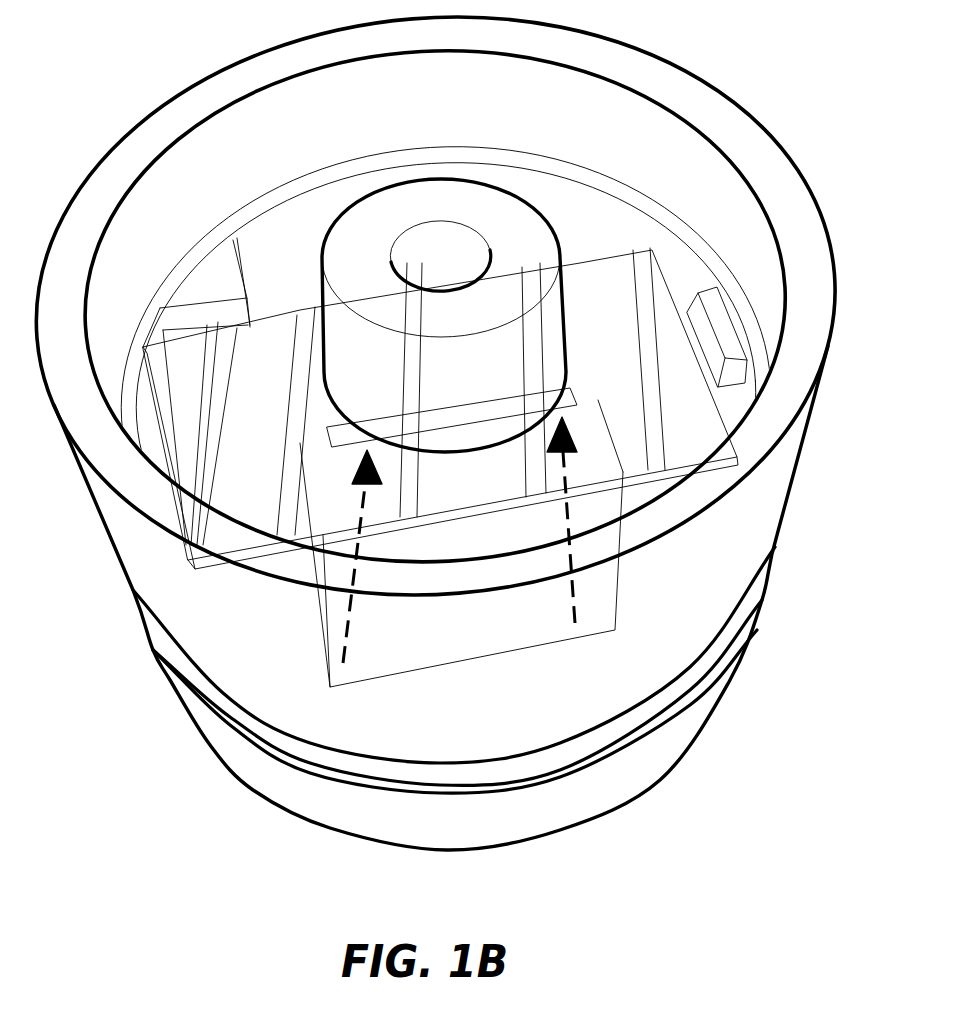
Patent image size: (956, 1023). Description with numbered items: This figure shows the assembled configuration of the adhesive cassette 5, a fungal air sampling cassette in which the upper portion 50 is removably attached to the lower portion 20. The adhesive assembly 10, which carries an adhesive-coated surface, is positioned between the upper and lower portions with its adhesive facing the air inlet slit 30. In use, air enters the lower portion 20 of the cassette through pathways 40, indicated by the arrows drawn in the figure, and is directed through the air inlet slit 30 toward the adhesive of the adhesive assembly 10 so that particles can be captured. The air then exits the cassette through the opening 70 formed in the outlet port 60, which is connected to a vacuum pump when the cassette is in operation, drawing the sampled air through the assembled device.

The adhesive cassette 5 is at (173, 39).
The adhesive assembly 10 is at (608, 277).
The lower portion 20 is at (707, 702).
The air inlet slit 30 is at (451, 413).
The pathways 40 is at (573, 605).
The upper portion 50 is at (693, 101).
The outlet port 60 is at (462, 203).
The opening 70 is at (419, 265).